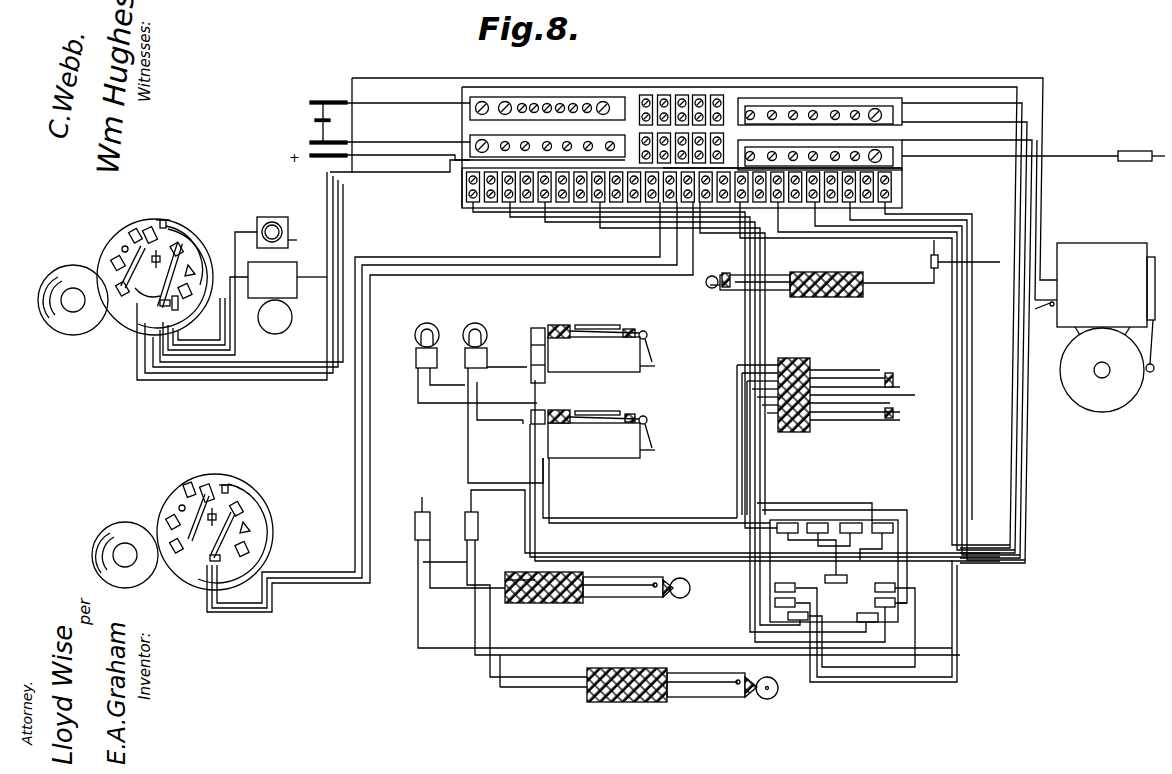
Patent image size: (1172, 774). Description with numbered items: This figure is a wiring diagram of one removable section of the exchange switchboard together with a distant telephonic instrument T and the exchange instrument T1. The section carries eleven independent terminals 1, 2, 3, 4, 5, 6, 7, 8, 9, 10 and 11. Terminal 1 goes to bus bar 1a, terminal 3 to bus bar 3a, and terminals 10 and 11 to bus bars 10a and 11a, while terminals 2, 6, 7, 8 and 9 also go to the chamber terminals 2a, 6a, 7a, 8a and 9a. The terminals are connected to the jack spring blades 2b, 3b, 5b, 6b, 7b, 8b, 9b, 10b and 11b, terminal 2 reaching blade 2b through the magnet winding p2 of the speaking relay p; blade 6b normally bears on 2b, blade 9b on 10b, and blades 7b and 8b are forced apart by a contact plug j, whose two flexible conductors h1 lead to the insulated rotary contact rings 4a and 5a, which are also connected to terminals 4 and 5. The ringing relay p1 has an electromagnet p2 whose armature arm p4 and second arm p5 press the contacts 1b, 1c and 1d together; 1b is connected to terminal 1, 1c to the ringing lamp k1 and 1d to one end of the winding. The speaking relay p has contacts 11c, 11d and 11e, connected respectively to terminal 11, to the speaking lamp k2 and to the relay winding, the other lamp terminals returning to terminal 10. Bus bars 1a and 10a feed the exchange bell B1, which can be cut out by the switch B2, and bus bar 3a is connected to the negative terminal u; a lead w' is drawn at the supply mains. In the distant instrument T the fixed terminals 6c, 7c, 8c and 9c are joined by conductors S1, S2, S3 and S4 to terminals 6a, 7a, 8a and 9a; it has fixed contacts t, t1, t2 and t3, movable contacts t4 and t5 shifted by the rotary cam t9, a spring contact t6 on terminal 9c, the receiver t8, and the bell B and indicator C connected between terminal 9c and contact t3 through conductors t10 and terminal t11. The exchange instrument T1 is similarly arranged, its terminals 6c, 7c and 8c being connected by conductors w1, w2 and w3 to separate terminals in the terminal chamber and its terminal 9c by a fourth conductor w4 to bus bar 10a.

The battery wire w' is at (454, 131).
The fourth conductor w4 is at (445, 78).
The negative terminal bar u is at (1133, 156).
The bus bar 10a is at (524, 100).
The bus bar 11a is at (470, 143).
The terminal 6a is at (646, 95).
The terminal 7a is at (664, 95).
The terminal 8a is at (682, 95).
The terminal 9a is at (699, 95).
The terminal 2a is at (717, 95).
The bus bar 1a is at (815, 110).
The bus bar 3a is at (850, 153).
The conductor S4 is at (327, 173).
The conductor S1 is at (418, 181).
The conductor S2 is at (442, 181).
The conductor S3 is at (285, 367).
The telephonic instrument T is at (131, 272).
The fixed contact t is at (131, 232).
The fixed contact t2 is at (150, 228).
The spring contact t6 is at (164, 219).
The fixed terminal 9c is at (172, 224).
The fixed contact t3 is at (180, 247).
The movable contact t4 is at (122, 247).
The fixed terminal 6c is at (113, 262).
The fixed contact t1 is at (196, 270).
The telephonic receiver t8 is at (159, 254).
The rotary cam t9 is at (147, 285).
The movable contact t5 is at (192, 290).
The terminal t11 is at (180, 308).
The conductors t10 is at (170, 322).
The fixed terminal 8c is at (73, 300).
The fixed terminal 7c is at (150, 300).
The indicator C is at (271, 217).
The telephone bell B is at (287, 298).
The exchange telephonic instrument T1 is at (285, 522).
The conductor w1 is at (212, 613).
The conductor w2 is at (240, 610).
The conductor w3 is at (270, 604).
The speaking lamp k2 is at (416, 358).
The ringing lamp k1 is at (465, 358).
The electro-magnet p2 is at (568, 462).
The relay contact 1b is at (577, 326).
The relay contact 1d is at (600, 325).
The relay contact 1c is at (630, 329).
The second arm of bell crank lever p5 is at (646, 331).
The ringing relay p1 is at (652, 352).
The arm of bell crank lever p4 is at (655, 367).
The relay contact 11e is at (595, 418).
The relay contact 11d is at (580, 411).
The relay contact 11c is at (630, 414).
The speaking relay p is at (664, 406).
The contact plug j is at (684, 487).
The insulated contact ring 5a is at (929, 262).
The insulated contact ring 4a is at (422, 510).
The flexible insulated conductors h1 is at (445, 555).
The jack spring contact 3b is at (820, 366).
The jack spring contact 2b is at (840, 378).
The jack spring contact 6b is at (875, 370).
The jack spring contact 7b is at (935, 388).
The jack spring contact 5b is at (900, 410).
The jack spring contact 8b is at (900, 420).
The jack spring contact 10b is at (818, 425).
The jack spring contact 9b is at (845, 425).
The jack spring contact 11b is at (865, 425).
The terminal 2 is at (785, 522).
The terminal 3 is at (817, 522).
The terminal 10 is at (850, 522).
The terminal 11 is at (882, 522).
The terminal 1 is at (836, 583).
The terminal 6 is at (785, 578).
The terminal 7 is at (775, 603).
The terminal 8 is at (795, 620).
The terminal 9 is at (885, 578).
The terminal 4 is at (895, 603).
The terminal 5 is at (866, 613).
The exchange bell B1 is at (1106, 327).
The switch B2 is at (1048, 308).